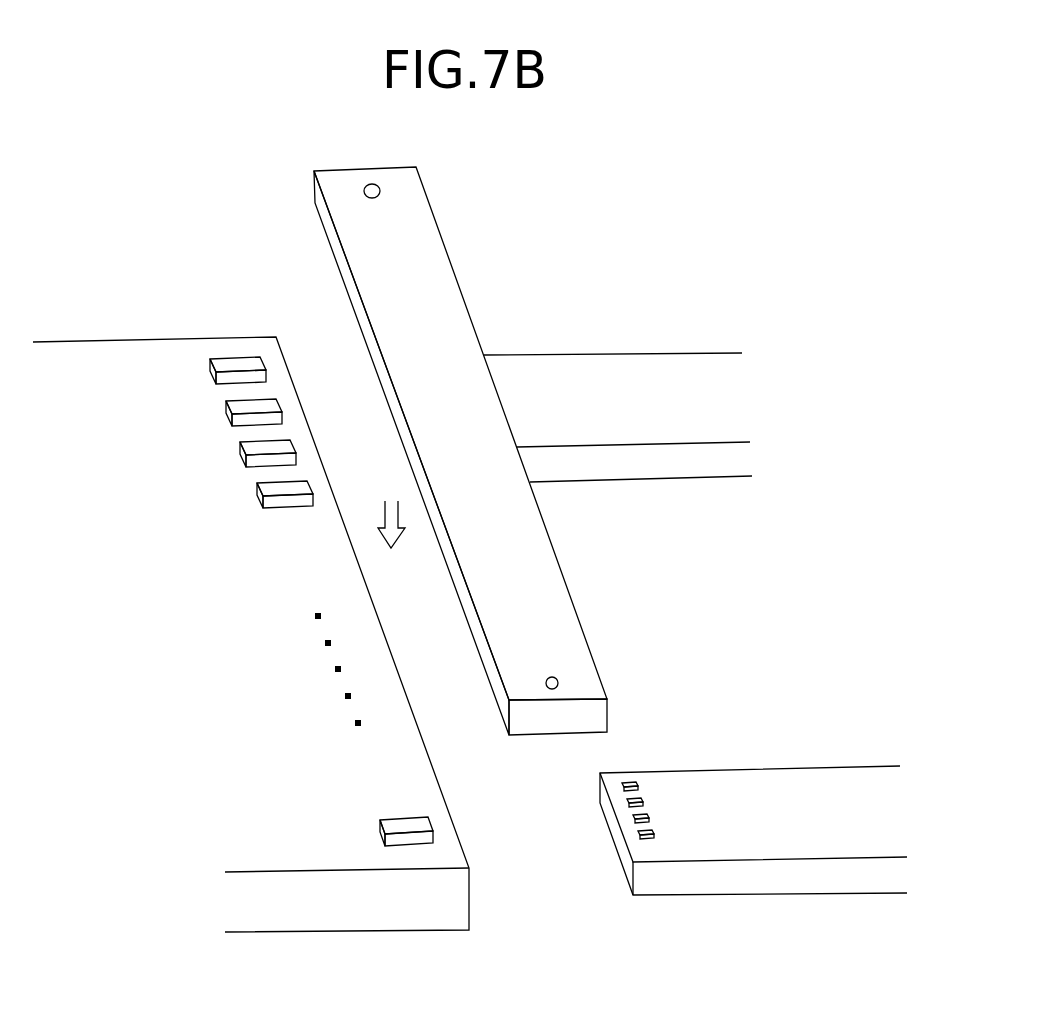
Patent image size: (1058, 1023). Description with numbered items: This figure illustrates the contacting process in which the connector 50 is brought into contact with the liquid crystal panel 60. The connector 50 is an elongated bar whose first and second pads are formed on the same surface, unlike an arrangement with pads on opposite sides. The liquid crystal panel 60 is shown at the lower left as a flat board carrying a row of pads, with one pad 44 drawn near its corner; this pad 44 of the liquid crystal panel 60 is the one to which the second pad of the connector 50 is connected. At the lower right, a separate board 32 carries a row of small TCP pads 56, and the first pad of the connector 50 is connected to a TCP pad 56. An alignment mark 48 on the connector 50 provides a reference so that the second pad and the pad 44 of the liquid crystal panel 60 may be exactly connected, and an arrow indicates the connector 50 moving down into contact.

The connector board 32 is at (787, 845).
The pad of the liquid crystal panel 44 is at (410, 831).
The alignment mark 48 is at (558, 681).
The connector 50 is at (427, 214).
The TCP pad 56 is at (653, 841).
The liquid crystal panel 60 is at (309, 927).